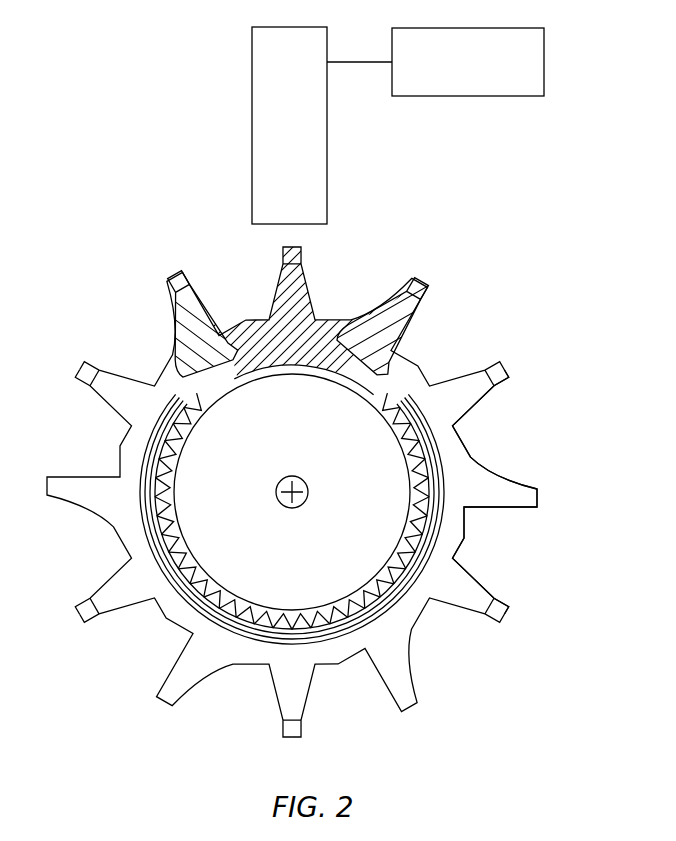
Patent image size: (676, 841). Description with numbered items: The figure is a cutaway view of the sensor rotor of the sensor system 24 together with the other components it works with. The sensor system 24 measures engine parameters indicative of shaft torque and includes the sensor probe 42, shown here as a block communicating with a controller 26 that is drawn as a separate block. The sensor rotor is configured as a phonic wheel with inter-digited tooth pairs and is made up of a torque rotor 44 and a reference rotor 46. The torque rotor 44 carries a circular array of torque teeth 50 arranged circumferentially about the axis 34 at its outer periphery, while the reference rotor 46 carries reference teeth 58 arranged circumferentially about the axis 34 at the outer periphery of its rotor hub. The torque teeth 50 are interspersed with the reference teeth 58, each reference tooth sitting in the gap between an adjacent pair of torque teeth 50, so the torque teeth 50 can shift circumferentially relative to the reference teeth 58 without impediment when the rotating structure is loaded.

The sensor system 24 is at (555, 196).
The controller 26 is at (562, 54).
The axis 34 is at (302, 499).
The sensor probe 42 is at (250, 96).
The torque rotor 44 is at (540, 355).
The reference rotor 46 is at (566, 500).
The torque teeth 50 is at (305, 282).
The reference teeth 58 is at (173, 316).